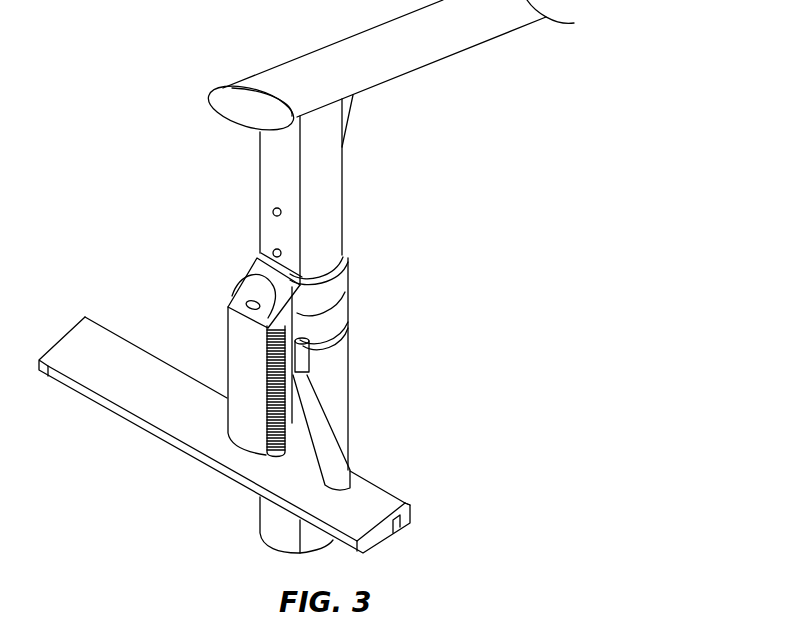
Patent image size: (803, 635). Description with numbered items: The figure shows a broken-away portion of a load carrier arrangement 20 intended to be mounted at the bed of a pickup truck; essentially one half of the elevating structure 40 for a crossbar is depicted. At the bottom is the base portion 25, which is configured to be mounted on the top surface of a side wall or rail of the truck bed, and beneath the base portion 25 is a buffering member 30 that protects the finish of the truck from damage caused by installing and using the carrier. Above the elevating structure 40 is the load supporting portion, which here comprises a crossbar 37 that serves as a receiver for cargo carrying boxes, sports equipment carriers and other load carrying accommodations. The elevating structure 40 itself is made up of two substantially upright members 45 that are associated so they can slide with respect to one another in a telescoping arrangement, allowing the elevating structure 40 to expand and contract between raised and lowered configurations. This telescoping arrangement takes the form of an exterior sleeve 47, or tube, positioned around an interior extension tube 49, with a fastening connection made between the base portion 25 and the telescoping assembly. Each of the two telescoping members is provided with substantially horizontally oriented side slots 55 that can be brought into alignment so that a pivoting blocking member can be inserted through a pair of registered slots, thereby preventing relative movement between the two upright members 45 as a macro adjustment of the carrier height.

The load carrier arrangement 20 is at (134, 212).
The base portion 25 is at (112, 454).
The buffering member 30 is at (397, 549).
The crossbar 37 is at (437, 45).
The elevating structure 40 is at (412, 243).
The upright members 45 is at (345, 196).
The exterior sleeve 47 is at (342, 387).
The extension tube 49 is at (265, 183).
The side slots 55 is at (332, 326).